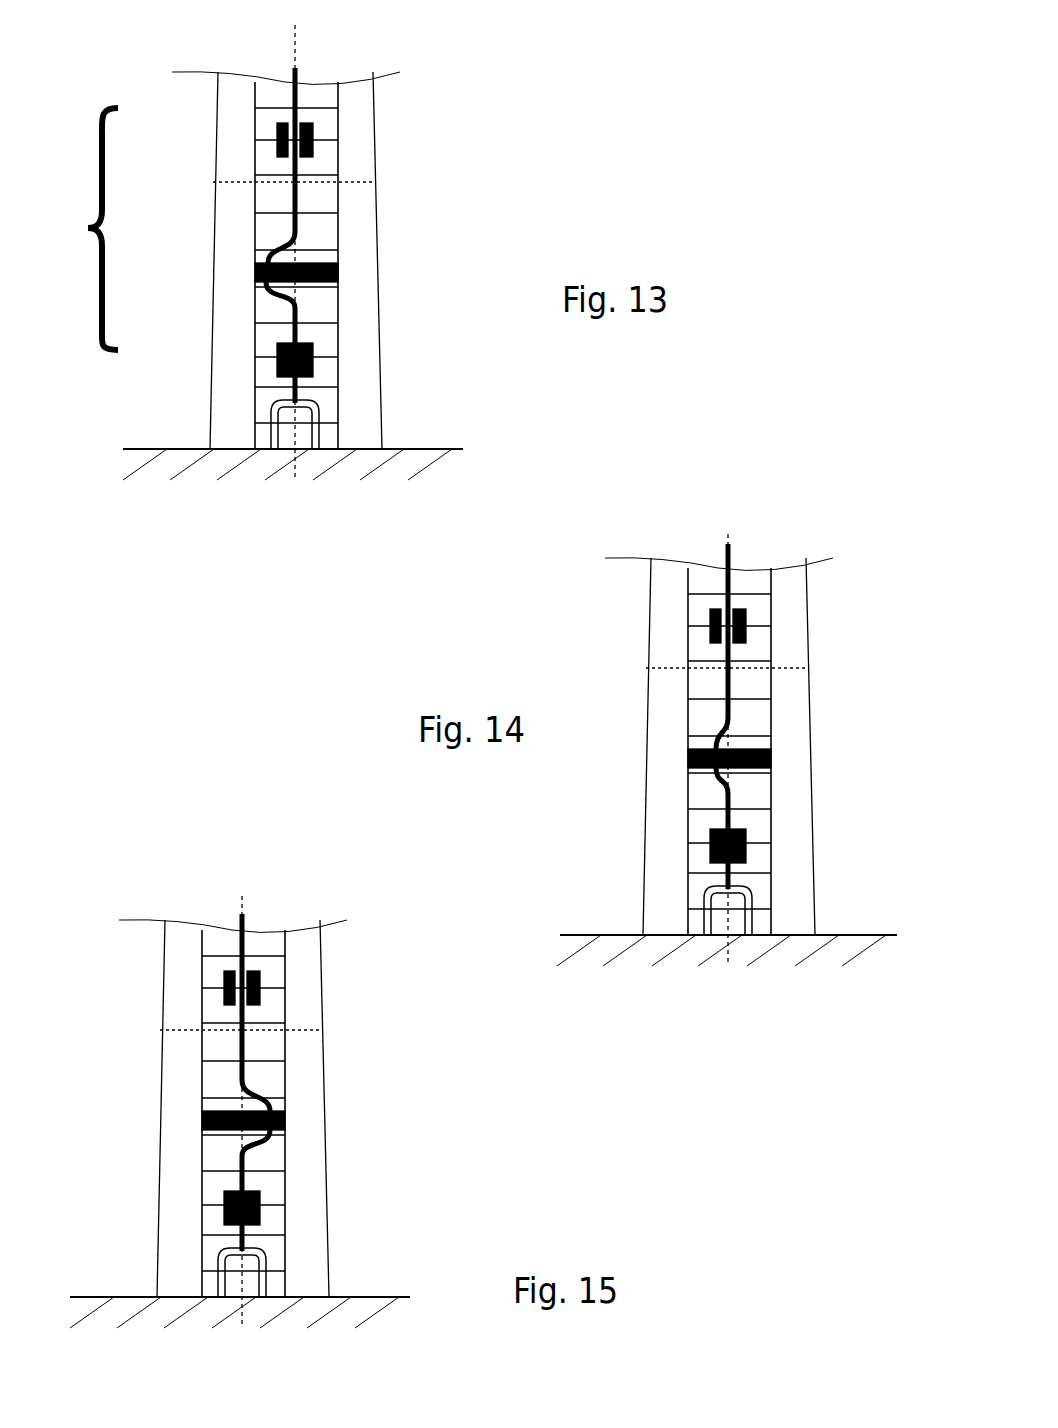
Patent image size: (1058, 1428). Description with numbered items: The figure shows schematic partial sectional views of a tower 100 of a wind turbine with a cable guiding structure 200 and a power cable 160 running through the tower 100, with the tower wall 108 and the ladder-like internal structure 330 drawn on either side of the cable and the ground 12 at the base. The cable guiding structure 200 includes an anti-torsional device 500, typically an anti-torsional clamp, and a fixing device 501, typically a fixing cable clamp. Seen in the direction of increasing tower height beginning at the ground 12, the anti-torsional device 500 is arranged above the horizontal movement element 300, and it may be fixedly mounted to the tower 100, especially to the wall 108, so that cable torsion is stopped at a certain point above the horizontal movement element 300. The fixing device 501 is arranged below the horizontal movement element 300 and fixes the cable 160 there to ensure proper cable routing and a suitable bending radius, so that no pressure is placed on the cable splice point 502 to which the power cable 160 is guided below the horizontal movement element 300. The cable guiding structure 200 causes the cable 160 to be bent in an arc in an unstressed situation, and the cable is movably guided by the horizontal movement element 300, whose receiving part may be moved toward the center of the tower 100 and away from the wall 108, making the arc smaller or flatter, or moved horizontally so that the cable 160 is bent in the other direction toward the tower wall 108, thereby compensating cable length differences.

In FIG. 13, the ground 12 is at (479, 486).
In FIG. 14, the ground 12 is at (743, 954).
In FIG. 15, the ground 12 is at (253, 1315).
In FIG. 13, the tower 100 is at (383, 250).
In FIG. 14, the tower 100 is at (749, 700).
In FIG. 15, the tower 100 is at (261, 1056).
In FIG. 13, the tower wall 108 is at (375, 268).
In FIG. 14, the tower wall 108 is at (785, 746).
In FIG. 15, the tower wall 108 is at (298, 1108).
In FIG. 13, the power cable 160 is at (297, 95).
In FIG. 14, the power cable 160 is at (826, 716).
In FIG. 15, the power cable 160 is at (347, 1082).
In FIG. 13, the cable guiding structure 200 is at (67, 229).
In FIG. 13, the horizontal movement element 300 is at (338, 272).
In FIG. 14, the horizontal movement element 300 is at (805, 789).
In FIG. 15, the horizontal movement element 300 is at (321, 1151).
In FIG. 13, the ladder 330 is at (338, 367).
In FIG. 14, the ladder 330 is at (794, 751).
In FIG. 15, the ladder 330 is at (307, 1113).
In FIG. 13, the anti-torsional device 500 is at (277, 155).
In FIG. 14, the anti-torsional device 500 is at (663, 609).
In FIG. 15, the anti-torsional device 500 is at (176, 971).
In FIG. 13, the fixing device 501 is at (277, 367).
In FIG. 14, the fixing device 501 is at (663, 830).
In FIG. 15, the fixing device 501 is at (181, 1189).
In FIG. 13, the cable splice point 502 is at (290, 392).
In FIG. 14, the cable splice point 502 is at (662, 892).
In FIG. 15, the cable splice point 502 is at (172, 1255).